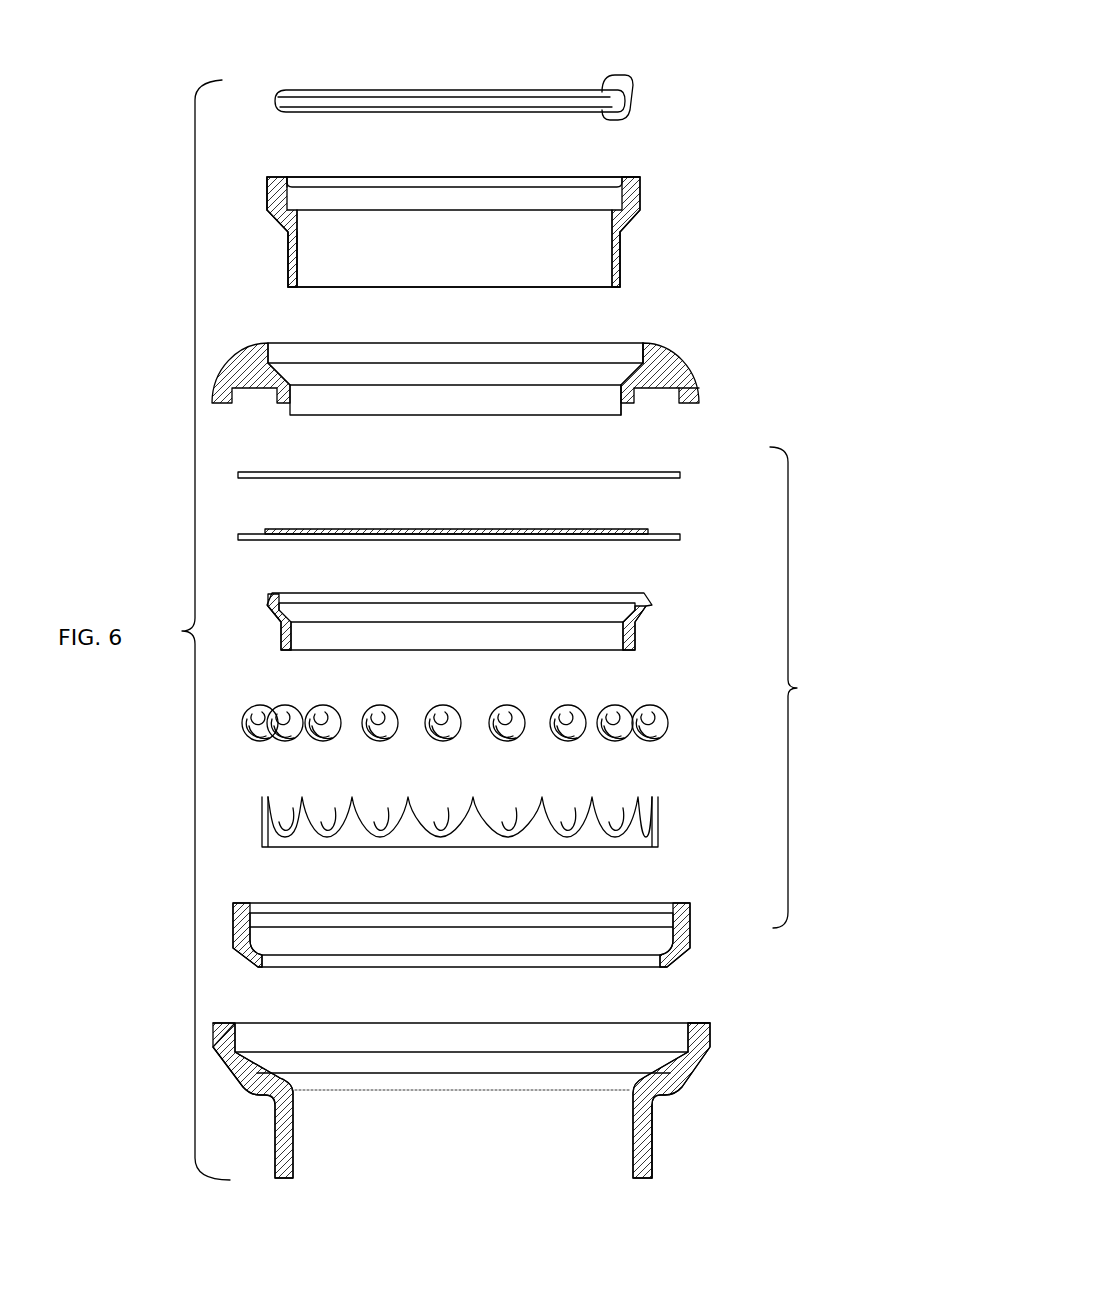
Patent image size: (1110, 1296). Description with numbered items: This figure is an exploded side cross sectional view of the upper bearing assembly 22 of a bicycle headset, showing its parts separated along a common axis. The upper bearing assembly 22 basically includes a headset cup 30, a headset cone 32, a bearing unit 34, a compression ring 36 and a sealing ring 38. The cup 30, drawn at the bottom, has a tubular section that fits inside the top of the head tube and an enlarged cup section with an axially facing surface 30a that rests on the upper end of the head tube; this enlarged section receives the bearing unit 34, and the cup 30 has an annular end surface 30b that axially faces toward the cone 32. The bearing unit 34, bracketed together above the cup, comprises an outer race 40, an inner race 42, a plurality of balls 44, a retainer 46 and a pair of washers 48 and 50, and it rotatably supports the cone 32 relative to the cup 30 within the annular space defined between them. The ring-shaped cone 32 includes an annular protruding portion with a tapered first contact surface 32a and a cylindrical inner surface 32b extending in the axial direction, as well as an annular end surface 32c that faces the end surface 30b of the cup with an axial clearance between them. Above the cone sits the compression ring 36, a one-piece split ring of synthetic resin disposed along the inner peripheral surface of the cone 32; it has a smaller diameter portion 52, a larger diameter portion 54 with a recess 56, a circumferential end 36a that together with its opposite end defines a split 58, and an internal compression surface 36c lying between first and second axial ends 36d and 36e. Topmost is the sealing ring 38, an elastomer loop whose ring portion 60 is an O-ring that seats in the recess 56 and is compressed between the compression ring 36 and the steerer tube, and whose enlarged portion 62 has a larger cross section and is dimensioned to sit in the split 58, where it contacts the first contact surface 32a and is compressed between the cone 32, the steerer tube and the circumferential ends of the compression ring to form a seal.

The upper bearing assembly 22 is at (752, 118).
The headset cup 30 is at (508, 1084).
The axially facing surface 30a is at (665, 1100).
The annular end surface 30b is at (700, 1025).
The headset cone 32 is at (503, 376).
The first contact surface 32a is at (626, 366).
The cylindrical inner surface 32b is at (612, 400).
The annular end surface 32c is at (690, 408).
The bearing unit 34 is at (529, 707).
The compression ring 36 is at (478, 229).
The circumferential end 36a is at (620, 262).
The internal compression surface 36c is at (297, 265).
The first axial end 36d is at (413, 178).
The second axial end 36e is at (405, 288).
The sealing ring 38 is at (494, 77).
The outer race 40 is at (692, 930).
The inner race 42 is at (655, 615).
The balls 44 is at (676, 720).
The retainer 46 is at (663, 823).
The washer 48 is at (676, 470).
The washer 50 is at (676, 535).
The smaller diameter portion 52 is at (287, 257).
The larger diameter portion 54 is at (272, 197).
The recess 56 is at (292, 205).
The split 58 is at (627, 181).
The ring portion 60 is at (368, 92).
The enlarged portion 62 is at (622, 77).